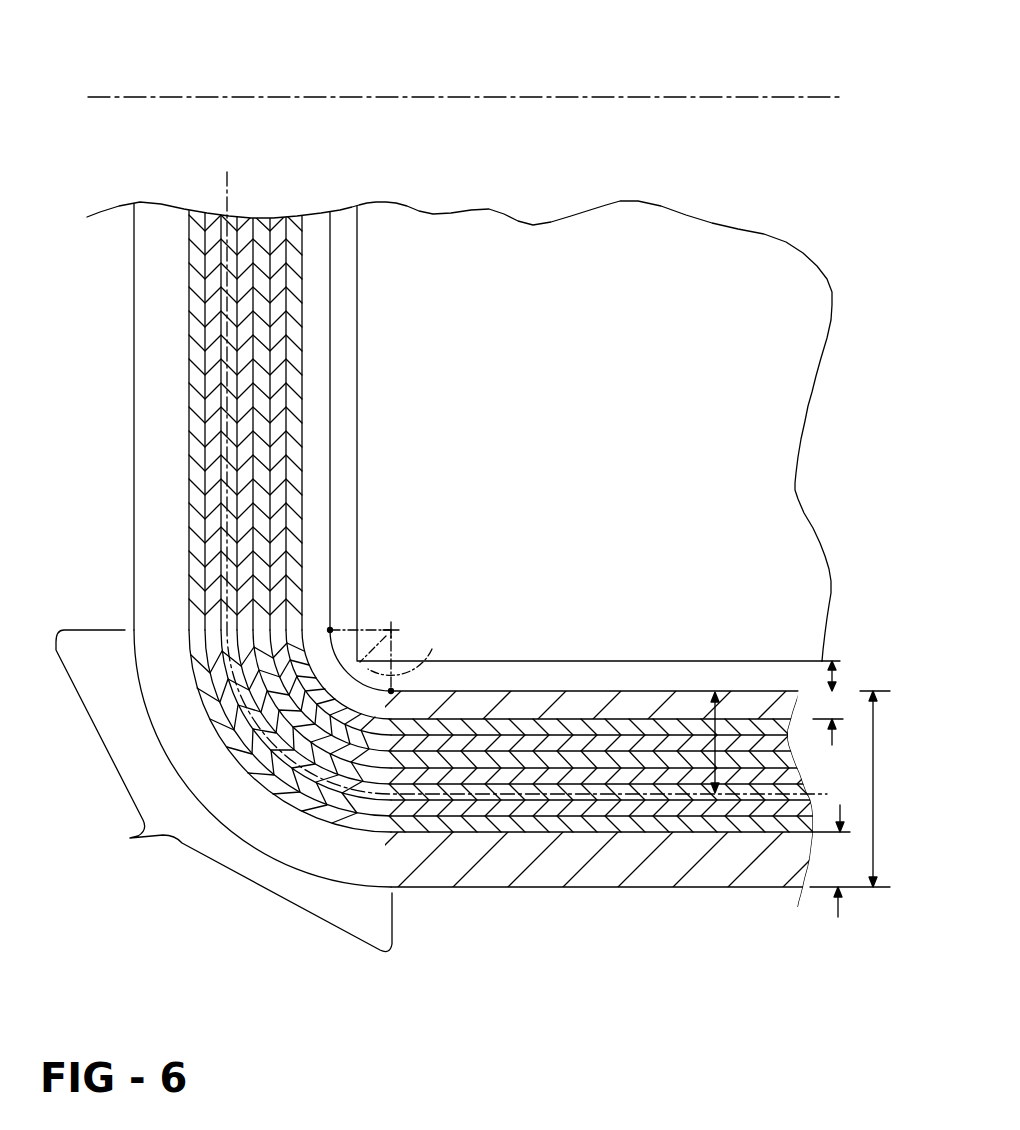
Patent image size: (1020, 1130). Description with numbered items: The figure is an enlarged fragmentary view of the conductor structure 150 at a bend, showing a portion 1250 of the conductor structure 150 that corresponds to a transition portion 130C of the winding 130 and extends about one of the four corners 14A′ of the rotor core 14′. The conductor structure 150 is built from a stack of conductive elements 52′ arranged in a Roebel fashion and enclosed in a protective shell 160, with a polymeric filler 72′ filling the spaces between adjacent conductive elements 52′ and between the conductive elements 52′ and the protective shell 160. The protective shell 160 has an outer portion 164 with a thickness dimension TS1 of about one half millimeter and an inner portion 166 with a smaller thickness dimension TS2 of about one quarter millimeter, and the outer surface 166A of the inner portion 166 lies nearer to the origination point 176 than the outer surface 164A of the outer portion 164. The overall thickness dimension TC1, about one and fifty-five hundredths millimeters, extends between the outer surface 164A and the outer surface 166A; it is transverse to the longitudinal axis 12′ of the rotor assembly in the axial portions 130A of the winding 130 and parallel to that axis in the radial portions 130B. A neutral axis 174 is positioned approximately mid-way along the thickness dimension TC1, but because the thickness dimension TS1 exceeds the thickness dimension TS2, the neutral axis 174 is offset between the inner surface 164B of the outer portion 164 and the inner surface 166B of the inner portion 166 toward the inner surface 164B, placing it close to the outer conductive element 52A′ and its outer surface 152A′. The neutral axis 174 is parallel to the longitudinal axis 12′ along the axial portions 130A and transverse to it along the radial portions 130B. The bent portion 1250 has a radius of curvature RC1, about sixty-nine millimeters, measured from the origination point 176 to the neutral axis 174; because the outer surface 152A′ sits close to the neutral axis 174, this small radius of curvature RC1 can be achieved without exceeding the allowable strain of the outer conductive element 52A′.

The longitudinal axis 12′ is at (158, 97).
The rotor core 14′ is at (537, 397).
The corner 14A′ is at (331, 628).
The conductive element 52′ is at (205, 482).
The outer conductive element 52A′ is at (340, 807).
The polymeric filler 72′ is at (531, 725).
The winding 130 is at (510, 593).
The axial portion 130A is at (758, 903).
The radial portion 130B is at (118, 436).
The transition portion 130C is at (260, 867).
The conductor structure 150 is at (342, 271).
The outer surface of the outer conductive element 152A′ is at (490, 833).
The protective shell 160 is at (120, 678).
The outer portion of the protective shell 164 is at (697, 878).
The outer surface of the outer portion 164A is at (610, 888).
The inner surface of the outer portion 164B is at (603, 825).
The inner portion of the protective shell 166 is at (690, 700).
The outer surface of the inner portion 166A is at (650, 693).
The inner surface of the inner portion 166B is at (558, 719).
The neutral axis 174 is at (703, 800).
The origination point 176 is at (393, 628).
The conductor structure portion 1250 is at (224, 791).
The radius of curvature RC1 is at (433, 648).
The thickness dimension of the outer portion TS1 is at (838, 917).
The thickness dimension of the inner portion TS2 is at (834, 662).
The overall thickness dimension TC1 is at (795, 789).